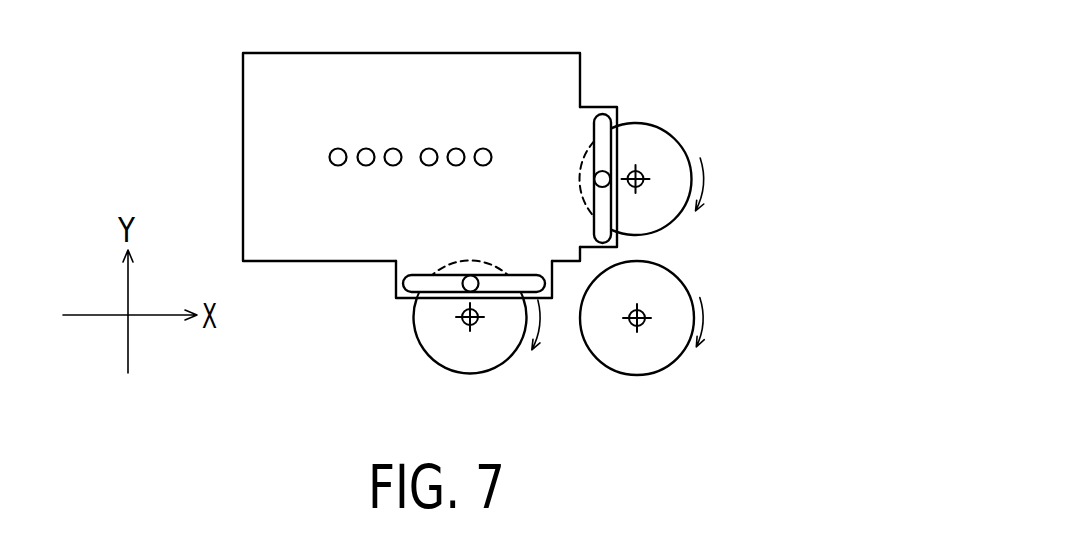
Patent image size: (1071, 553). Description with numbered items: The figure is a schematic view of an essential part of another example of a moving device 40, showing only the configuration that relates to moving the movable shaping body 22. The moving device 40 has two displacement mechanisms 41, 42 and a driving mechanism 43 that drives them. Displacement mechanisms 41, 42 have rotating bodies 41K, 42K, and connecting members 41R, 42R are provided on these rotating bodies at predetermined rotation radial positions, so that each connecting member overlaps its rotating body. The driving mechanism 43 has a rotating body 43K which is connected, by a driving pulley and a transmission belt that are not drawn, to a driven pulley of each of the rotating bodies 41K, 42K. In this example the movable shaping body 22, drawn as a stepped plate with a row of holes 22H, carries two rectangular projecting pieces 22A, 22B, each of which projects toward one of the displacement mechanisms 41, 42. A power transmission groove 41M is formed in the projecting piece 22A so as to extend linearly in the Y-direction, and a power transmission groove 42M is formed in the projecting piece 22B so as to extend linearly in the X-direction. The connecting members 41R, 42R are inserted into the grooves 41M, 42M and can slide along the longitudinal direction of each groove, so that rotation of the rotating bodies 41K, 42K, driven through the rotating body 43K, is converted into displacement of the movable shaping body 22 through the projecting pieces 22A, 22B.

The movable shaping body 22 is at (260, 83).
The projecting piece 22A is at (602, 113).
The projecting piece 22B is at (397, 285).
The holes in frame 22H is at (329, 157).
The moving device 40 is at (589, 244).
The displacement mechanism 41 is at (675, 170).
The rotating body 41K is at (668, 215).
The power transmission groove 41M is at (598, 152).
The connecting member 41R is at (594, 179).
The displacement mechanism 42 is at (429, 329).
The rotating body 42K is at (441, 362).
The power transmission groove 42M is at (445, 287).
The connecting member 42R is at (466, 275).
The driving mechanism 43 is at (685, 321).
The rotating body 43K is at (683, 290).